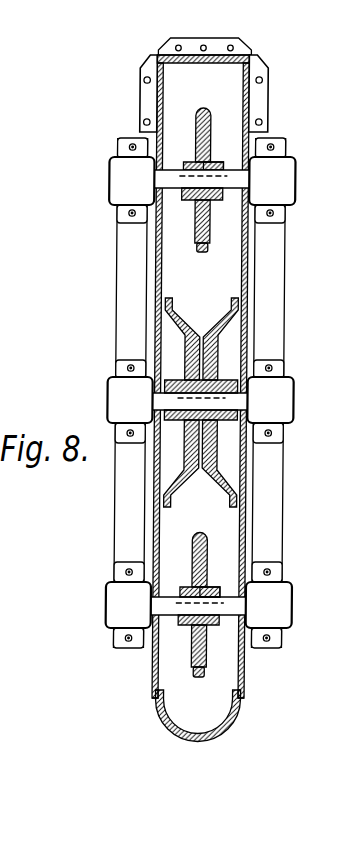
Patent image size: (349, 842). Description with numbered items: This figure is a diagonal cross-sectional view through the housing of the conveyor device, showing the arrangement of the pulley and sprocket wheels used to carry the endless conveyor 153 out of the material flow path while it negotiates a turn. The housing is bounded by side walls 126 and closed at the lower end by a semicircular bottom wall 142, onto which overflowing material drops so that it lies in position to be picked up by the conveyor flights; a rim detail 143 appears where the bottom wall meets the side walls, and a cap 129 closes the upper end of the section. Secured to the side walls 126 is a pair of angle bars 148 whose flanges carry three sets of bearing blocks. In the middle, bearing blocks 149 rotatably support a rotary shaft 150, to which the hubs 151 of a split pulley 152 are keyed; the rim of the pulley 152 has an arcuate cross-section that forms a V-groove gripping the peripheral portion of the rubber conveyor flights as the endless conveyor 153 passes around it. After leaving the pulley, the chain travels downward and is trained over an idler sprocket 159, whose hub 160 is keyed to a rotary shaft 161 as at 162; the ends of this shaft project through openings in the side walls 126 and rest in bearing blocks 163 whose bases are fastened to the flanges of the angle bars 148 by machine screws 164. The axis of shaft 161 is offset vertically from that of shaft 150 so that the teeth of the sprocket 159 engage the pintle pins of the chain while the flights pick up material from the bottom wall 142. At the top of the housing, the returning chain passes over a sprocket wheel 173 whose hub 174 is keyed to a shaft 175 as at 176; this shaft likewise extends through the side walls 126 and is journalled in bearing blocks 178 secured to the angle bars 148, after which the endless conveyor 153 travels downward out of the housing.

The side walls 126 is at (155, 289).
The top cap 129 is at (212, 56).
The semicircular bottom wall 142 is at (199, 741).
The cup rim 143 is at (157, 695).
The angle bars 148 is at (130, 329).
The bearing blocks 149 is at (118, 393).
The rotary shaft 150 is at (245, 452).
The hubs 151 is at (140, 360).
The split pulley 152 is at (222, 308).
The endless conveyor 153 is at (143, 393).
The idler sprocket 159 is at (214, 522).
The hub 160 is at (219, 587).
The rotary shaft 161 is at (170, 612).
The key 162 is at (178, 587).
The bearing blocks 163 is at (118, 601).
The machine screws 164 is at (125, 571).
The sprocket wheel 173 is at (209, 107).
The hub 174 is at (223, 162).
The shaft 175 is at (175, 190).
The key 176 is at (186, 162).
The bearing blocks 178 is at (118, 190).